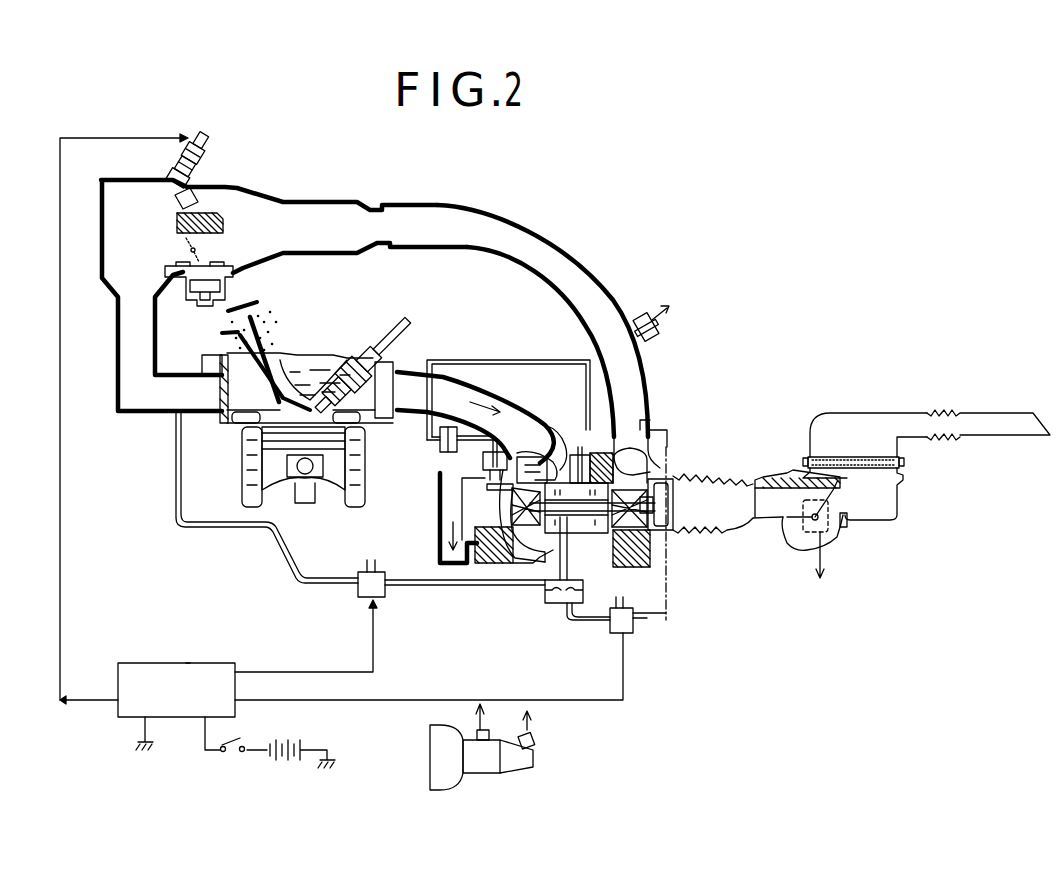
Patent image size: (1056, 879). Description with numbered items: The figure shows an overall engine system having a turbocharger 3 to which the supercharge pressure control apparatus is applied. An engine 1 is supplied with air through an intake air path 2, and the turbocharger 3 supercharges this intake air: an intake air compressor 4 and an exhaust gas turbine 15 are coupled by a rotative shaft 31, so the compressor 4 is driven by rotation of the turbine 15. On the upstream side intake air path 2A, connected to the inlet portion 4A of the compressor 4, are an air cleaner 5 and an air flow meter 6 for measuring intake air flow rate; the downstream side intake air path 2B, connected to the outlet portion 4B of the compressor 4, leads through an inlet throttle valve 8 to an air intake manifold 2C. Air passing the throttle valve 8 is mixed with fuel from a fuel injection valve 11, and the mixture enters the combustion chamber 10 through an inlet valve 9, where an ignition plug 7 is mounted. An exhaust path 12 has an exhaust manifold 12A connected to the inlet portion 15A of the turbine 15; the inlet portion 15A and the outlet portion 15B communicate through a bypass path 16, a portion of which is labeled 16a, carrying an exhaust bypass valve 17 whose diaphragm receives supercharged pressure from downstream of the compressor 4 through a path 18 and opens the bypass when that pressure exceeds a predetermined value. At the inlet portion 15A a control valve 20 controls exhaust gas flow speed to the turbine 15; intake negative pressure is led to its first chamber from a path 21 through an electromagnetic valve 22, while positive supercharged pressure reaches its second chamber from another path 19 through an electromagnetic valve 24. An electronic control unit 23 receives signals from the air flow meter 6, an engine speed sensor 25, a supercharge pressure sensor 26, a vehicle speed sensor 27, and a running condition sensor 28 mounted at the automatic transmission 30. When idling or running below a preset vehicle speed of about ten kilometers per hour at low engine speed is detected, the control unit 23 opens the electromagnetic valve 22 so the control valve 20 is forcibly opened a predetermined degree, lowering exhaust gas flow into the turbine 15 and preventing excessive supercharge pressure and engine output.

The engine 1 is at (337, 350).
The intake air path 2 is at (432, 200).
The upstream side intake air path 2A is at (725, 533).
The downstream side intake air path 2B is at (548, 230).
The air intake manifold 2C is at (140, 413).
The turbocharger 3 is at (587, 436).
The intake air compressor 4 is at (653, 537).
The inlet portion 4A is at (673, 490).
The outlet portion 4B is at (640, 417).
The air cleaner 5 is at (823, 432).
The air flow meter 6 is at (837, 550).
The ignition plug 7 is at (345, 360).
The inlet throttle valve 8 is at (205, 188).
The inlet valve 9 is at (237, 305).
The combustion chamber 10 is at (250, 430).
The fuel injection valve 11 is at (205, 131).
The exhaust path 12 is at (440, 525).
The exhaust manifold 12A is at (507, 393).
The exhaust gas turbine 15 is at (507, 512).
The inlet portion 15A is at (540, 440).
The outlet portion 15B is at (495, 533).
The bypass path 16 is at (476, 483).
The valve rod 16a is at (563, 513).
The exhaust bypass valve 17 is at (437, 447).
The path 18 is at (468, 360).
The path 19 is at (667, 437).
The control valve 20 is at (557, 613).
The path 21 is at (175, 493).
The electromagnetic valve 22 is at (388, 597).
The electronic control unit 23 is at (175, 720).
The electromagnetic valve 24 is at (633, 633).
The engine speed sensor 25 is at (188, 660).
The supercharge pressure sensor 26 is at (640, 327).
The vehicle speed sensor 27 is at (130, 660).
The running condition sensor 28 is at (239, 655).
The automatic transmission 30 is at (430, 750).
The rotative shaft 31 is at (590, 520).